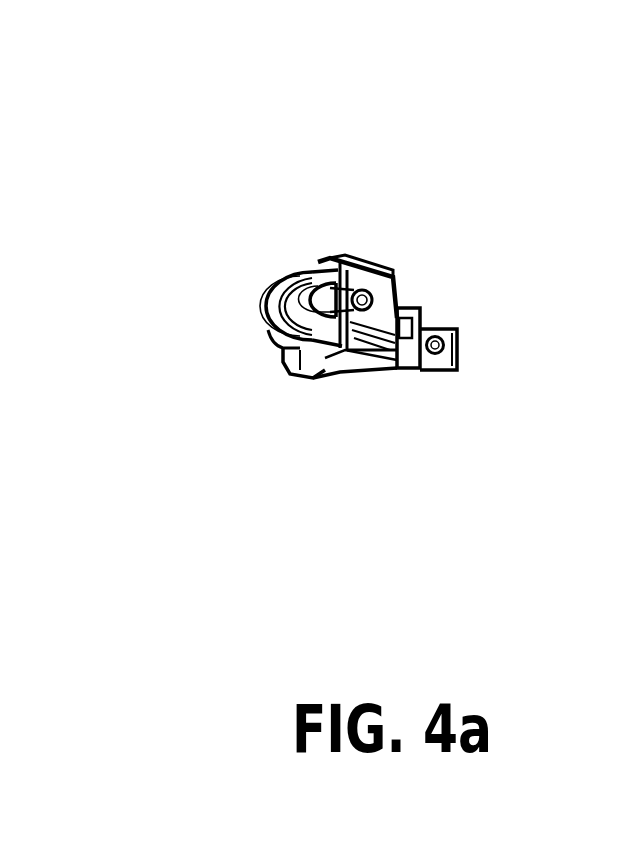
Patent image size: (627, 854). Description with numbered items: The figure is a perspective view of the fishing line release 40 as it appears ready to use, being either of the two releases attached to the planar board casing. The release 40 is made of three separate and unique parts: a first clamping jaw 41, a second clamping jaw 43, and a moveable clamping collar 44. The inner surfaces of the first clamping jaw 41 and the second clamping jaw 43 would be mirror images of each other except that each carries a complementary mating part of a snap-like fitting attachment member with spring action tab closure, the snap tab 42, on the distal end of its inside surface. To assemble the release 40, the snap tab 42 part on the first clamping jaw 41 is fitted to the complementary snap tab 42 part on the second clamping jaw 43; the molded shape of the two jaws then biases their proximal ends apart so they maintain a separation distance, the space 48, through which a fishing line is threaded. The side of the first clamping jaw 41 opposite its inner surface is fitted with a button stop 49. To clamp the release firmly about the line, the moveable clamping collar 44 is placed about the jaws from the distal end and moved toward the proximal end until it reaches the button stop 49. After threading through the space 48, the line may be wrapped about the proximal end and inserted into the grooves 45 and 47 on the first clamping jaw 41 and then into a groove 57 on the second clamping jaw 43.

The fishing line release 40 is at (560, 80).
The first clamping jaw 41 is at (270, 277).
The snap tab 42 is at (452, 332).
The second clamping jaw 43 is at (257, 320).
The moveable clamping collar 44 is at (323, 268).
The groove 45 is at (300, 266).
The groove 47 is at (290, 370).
The space 48 is at (330, 377).
The button stop 49 is at (373, 270).
The groove 57 is at (272, 340).